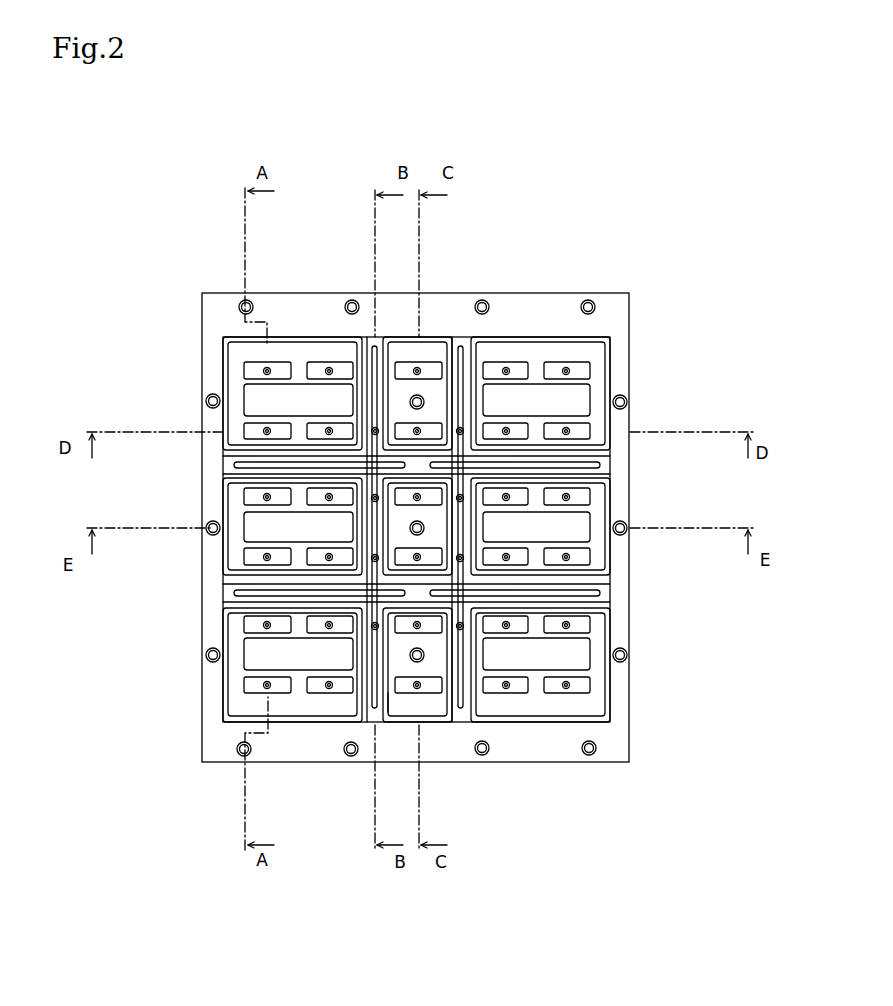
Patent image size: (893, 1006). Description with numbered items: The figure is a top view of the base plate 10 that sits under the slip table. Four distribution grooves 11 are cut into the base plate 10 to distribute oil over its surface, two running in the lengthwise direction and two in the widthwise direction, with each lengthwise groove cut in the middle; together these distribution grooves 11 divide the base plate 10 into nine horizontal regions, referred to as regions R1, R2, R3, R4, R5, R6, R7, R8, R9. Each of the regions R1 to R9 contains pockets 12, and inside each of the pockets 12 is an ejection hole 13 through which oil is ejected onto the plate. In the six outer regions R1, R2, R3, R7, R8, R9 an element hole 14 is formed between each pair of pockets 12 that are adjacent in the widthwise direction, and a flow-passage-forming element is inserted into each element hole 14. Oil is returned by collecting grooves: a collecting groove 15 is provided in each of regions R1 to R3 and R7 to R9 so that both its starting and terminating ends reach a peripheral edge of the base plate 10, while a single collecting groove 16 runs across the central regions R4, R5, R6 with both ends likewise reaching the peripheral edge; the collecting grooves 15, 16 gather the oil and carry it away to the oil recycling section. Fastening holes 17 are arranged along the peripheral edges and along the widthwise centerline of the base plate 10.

The base plate 10 is at (621, 294).
The distribution grooves 11 is at (358, 335).
The pockets 12 is at (253, 427).
The ejection holes 13 is at (267, 432).
The element hole 14 is at (263, 395).
The collecting groove 15 is at (372, 350).
The collecting groove 16 is at (388, 693).
The fastening holes 17 is at (242, 300).
The region R1 is at (240, 347).
The region R2 is at (235, 520).
The region R3 is at (240, 700).
The region R4 is at (431, 345).
The region R5 is at (398, 540).
The region R6 is at (398, 712).
The region R7 is at (594, 348).
The region R8 is at (597, 508).
The region R9 is at (593, 705).